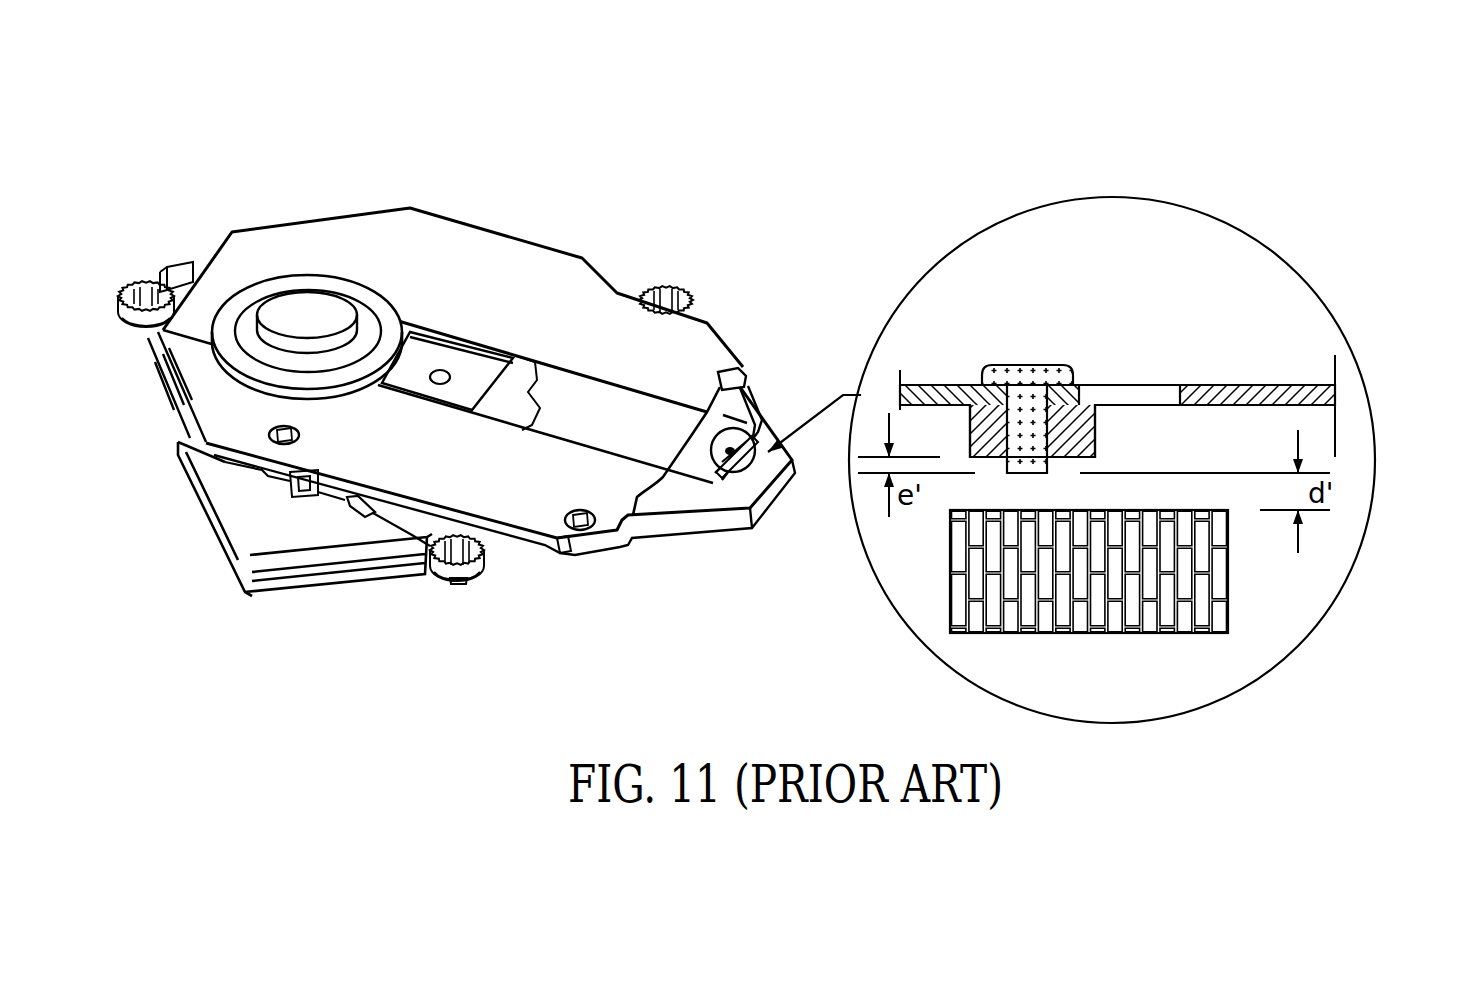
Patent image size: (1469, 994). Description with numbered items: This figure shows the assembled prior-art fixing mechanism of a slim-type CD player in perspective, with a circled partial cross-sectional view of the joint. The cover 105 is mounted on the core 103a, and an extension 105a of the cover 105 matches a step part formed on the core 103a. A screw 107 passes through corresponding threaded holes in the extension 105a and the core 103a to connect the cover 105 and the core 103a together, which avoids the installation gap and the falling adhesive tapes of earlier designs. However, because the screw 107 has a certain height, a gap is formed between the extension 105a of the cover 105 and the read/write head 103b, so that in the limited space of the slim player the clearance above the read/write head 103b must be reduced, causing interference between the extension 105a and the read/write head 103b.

The cover 105 is at (541, 236).
The extension 105a is at (757, 420).
The screw 107 is at (720, 482).
The core 103a is at (787, 498).
The read/write head 103b is at (508, 405).